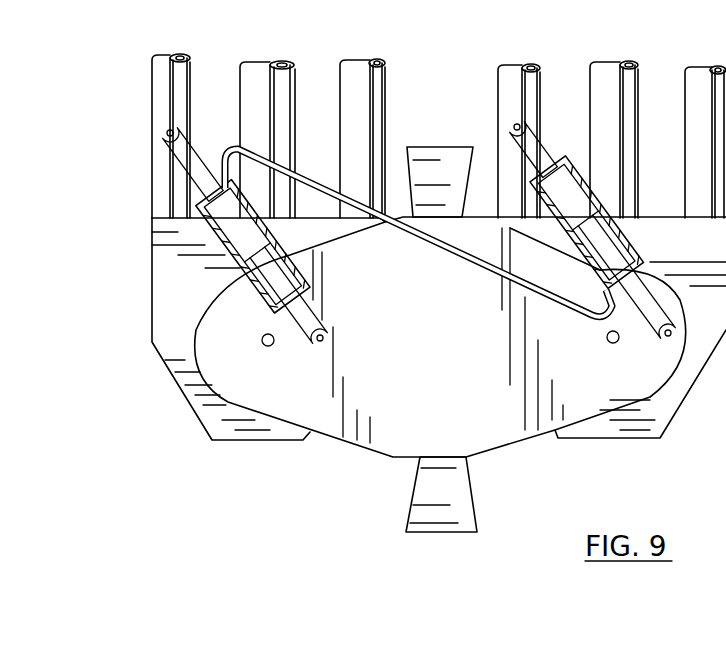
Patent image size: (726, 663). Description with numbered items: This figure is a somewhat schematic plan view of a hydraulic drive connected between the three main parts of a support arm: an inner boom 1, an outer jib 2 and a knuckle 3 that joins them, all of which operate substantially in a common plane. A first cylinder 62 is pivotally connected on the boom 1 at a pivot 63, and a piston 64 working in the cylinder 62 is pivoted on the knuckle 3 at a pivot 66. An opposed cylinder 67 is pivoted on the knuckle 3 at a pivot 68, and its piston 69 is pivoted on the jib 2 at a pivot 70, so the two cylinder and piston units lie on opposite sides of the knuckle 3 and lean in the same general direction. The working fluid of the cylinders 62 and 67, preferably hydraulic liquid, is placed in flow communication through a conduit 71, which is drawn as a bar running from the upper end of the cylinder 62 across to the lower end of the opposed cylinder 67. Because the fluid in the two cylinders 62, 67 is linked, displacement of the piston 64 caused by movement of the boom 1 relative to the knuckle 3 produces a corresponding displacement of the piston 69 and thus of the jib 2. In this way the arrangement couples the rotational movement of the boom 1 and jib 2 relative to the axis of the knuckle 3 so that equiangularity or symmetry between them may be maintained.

The inner boom 1 is at (103, 142).
The outer jib 2 is at (488, 70).
The knuckle 3 is at (208, 327).
The cylinder 62 is at (222, 245).
The pivotal connection of cylinder on boom 63 is at (167, 128).
The piston 64 is at (308, 318).
The pivot of piston on knuckle 66 is at (321, 345).
The opposed cylinder 67 is at (578, 265).
The pivot of opposed cylinder on knuckle 68 is at (656, 340).
The piston 69 is at (538, 157).
The pivot of piston on jib 70 is at (521, 126).
The conduit 71 is at (452, 253).